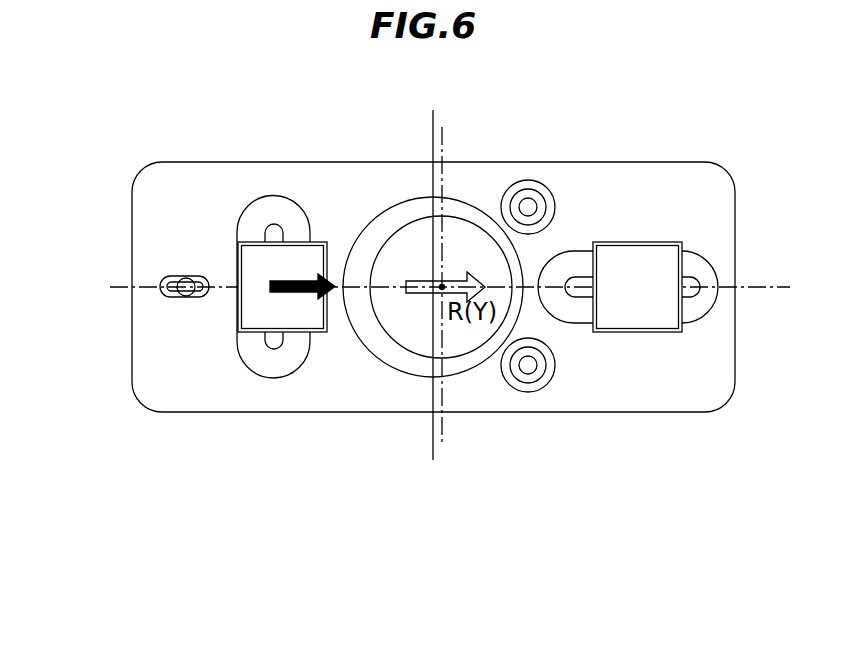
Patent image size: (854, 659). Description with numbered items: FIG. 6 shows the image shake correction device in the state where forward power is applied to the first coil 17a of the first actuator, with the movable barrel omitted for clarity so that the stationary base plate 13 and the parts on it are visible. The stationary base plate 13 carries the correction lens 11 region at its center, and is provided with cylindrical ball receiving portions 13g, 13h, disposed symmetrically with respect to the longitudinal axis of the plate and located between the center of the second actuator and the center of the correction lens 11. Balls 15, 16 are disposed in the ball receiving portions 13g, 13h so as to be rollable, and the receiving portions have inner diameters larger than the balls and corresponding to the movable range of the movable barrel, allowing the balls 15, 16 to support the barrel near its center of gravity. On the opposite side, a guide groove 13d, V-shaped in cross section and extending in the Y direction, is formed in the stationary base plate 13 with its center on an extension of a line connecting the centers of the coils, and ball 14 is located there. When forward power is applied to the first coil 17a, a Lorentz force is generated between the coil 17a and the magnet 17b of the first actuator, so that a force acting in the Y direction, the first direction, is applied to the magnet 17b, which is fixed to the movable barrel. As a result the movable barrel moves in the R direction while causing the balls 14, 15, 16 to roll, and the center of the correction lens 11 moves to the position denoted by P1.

The correction lens 11 is at (408, 240).
The stationary base plate 13 is at (695, 178).
The guide groove 13d is at (172, 298).
The ball receiving portion 13g is at (557, 207).
The ball receiving portion 13h is at (557, 373).
The ball 14 is at (182, 273).
The ball 15 is at (534, 204).
The ball 16 is at (532, 370).
The first coil 17a is at (273, 212).
The magnet 17b is at (253, 313).
The position P1 is at (442, 287).